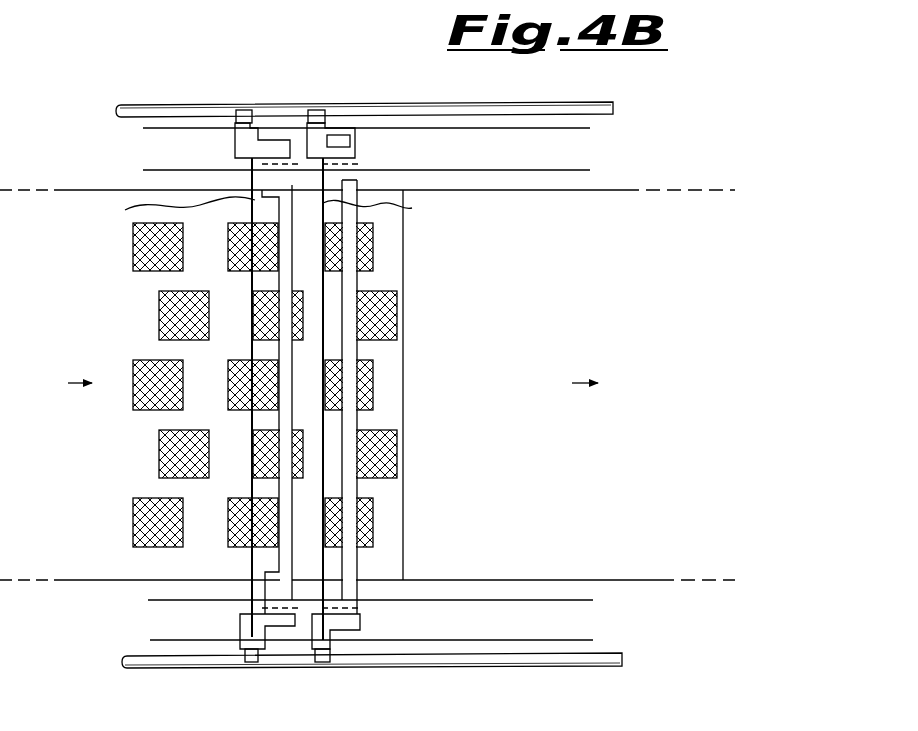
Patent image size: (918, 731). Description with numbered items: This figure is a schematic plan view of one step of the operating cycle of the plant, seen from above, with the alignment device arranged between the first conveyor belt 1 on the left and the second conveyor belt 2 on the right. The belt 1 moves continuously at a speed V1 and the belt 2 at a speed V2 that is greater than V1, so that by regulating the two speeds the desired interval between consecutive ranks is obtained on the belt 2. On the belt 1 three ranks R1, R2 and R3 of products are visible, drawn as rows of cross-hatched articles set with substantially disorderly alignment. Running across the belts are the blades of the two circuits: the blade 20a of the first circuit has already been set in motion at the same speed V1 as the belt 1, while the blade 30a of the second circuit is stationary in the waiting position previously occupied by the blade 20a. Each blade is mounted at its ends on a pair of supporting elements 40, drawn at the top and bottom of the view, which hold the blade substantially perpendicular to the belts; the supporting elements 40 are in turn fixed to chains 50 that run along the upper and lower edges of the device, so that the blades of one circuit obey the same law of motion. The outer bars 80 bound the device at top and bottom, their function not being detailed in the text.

The first conveyor belt 1 is at (60, 190).
The second conveyor belt 2 is at (626, 190).
The blade 20a is at (388, 399).
The blade 30a is at (186, 397).
The supporting element 40 is at (236, 146).
The chain 50 is at (490, 128).
The support bar 80 is at (607, 104).
The rank R1 is at (373, 553).
The rank R2 is at (239, 553).
The rank R3 is at (146, 554).
The speed V1 is at (61, 369).
The speed V2 is at (566, 369).